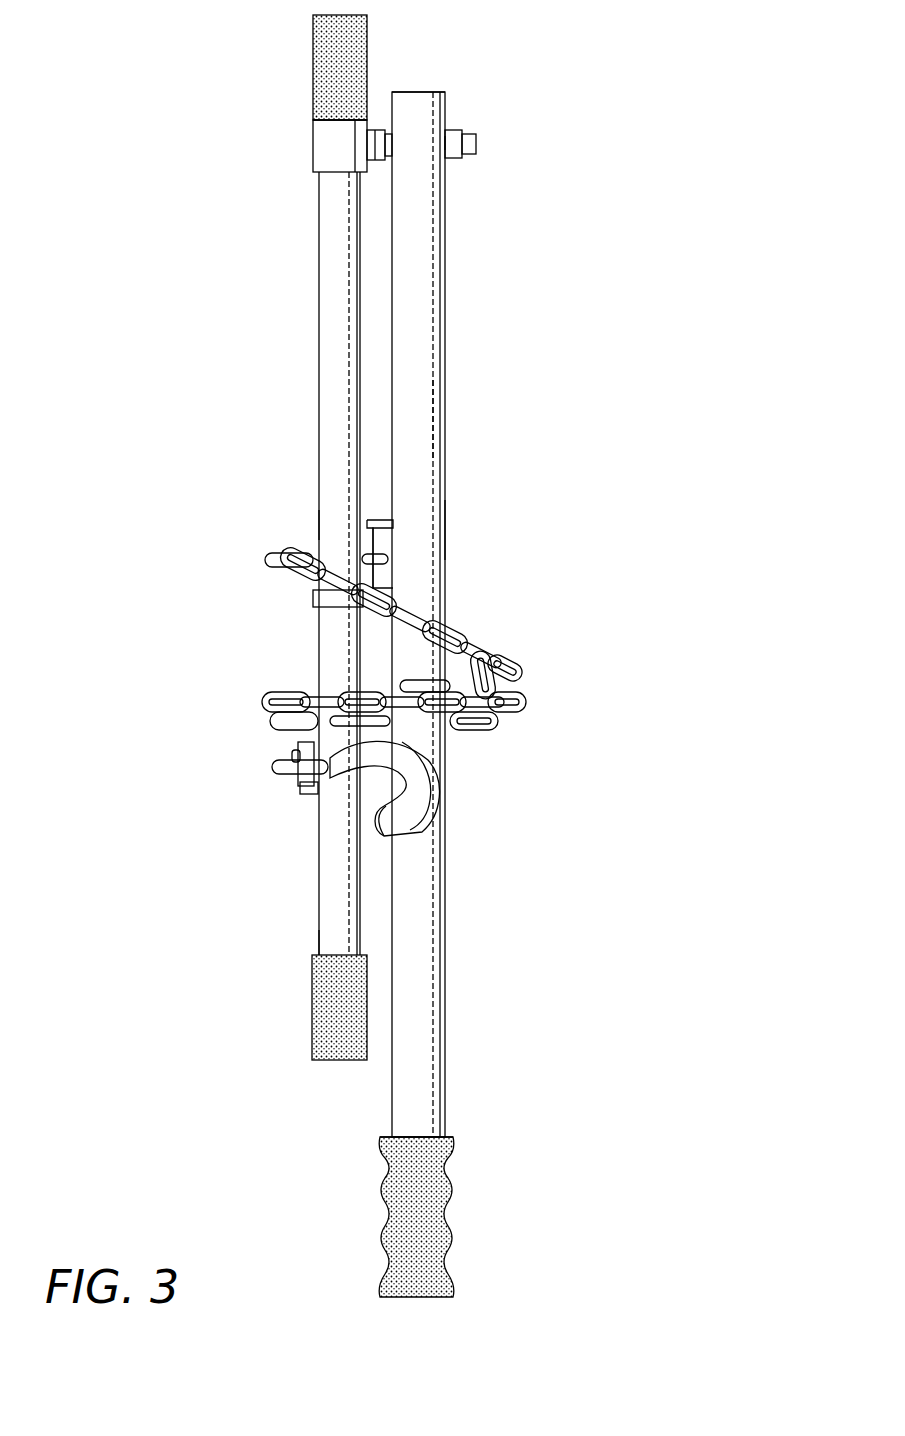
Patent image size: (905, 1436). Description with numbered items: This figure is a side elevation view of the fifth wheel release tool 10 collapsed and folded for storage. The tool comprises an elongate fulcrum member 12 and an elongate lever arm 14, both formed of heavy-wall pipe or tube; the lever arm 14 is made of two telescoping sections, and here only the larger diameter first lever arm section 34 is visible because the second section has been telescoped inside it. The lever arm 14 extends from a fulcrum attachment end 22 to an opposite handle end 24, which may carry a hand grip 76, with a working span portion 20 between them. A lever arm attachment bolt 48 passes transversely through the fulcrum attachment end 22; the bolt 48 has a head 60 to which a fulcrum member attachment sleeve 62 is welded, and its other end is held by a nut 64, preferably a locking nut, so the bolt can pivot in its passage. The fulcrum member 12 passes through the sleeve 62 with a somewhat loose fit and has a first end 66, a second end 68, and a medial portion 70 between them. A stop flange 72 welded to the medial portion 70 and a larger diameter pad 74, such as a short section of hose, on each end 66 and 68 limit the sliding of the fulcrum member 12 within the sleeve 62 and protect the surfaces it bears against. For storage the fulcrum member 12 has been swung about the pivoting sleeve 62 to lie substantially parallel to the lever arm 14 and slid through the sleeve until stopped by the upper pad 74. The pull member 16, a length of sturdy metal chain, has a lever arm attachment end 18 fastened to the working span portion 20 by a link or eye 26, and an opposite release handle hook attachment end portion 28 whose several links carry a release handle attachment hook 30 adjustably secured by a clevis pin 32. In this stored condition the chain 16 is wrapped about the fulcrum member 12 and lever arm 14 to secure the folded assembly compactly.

The fifth wheel release tool 10 is at (147, 1022).
The fulcrum member 12 is at (319, 337).
The lever arm 14 is at (448, 332).
The pull member 16 is at (521, 688).
The lever arm attachment end 18 is at (390, 560).
The working span portion 20 is at (447, 530).
The fulcrum attachment end 22 is at (447, 108).
The handle end 24 is at (452, 1205).
The link or eye 26 is at (371, 522).
The release handle hook attachment end portion 28 is at (274, 760).
The release handle attachment hook 30 is at (445, 808).
The clevis pin 32 is at (308, 794).
The first lever arm section 34 is at (411, 426).
The lever arm attachment bolt 48 is at (478, 144).
The head 60 is at (377, 130).
The fulcrum member attachment sleeve 62 is at (313, 153).
The nut 64 is at (468, 176).
The first end 66 is at (313, 95).
The second end 68 is at (318, 945).
The medial portion 70 is at (319, 524).
The stop flange 72 is at (315, 600).
The pad 74 is at (335, 48).
The hand grip 76 is at (391, 1207).